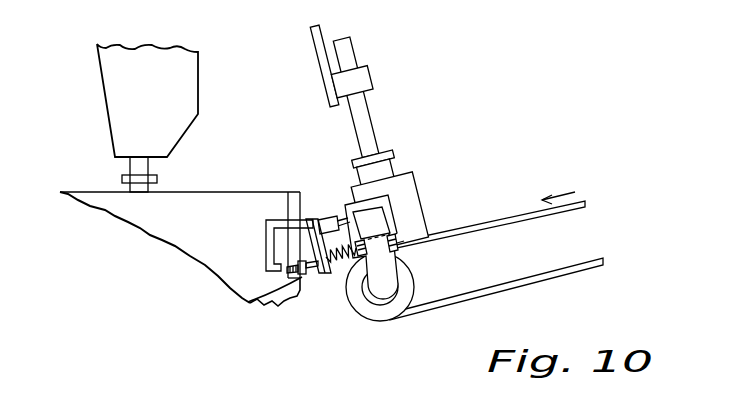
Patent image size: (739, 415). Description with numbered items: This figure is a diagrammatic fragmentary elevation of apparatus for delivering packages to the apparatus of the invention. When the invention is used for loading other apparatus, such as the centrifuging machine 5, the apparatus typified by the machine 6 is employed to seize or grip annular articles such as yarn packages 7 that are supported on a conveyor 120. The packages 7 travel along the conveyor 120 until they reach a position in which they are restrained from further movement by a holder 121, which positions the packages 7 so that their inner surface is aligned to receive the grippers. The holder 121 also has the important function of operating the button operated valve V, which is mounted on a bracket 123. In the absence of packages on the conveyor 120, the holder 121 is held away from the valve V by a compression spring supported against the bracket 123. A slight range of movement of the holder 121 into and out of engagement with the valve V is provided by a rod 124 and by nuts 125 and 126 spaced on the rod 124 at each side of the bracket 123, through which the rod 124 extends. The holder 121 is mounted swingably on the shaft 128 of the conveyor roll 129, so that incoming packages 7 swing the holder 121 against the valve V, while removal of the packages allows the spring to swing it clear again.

The centrifuging machine 5 is at (215, 185).
The machine 6 is at (137, 106).
The yarn packages 7 is at (415, 200).
The conveyor 120 is at (505, 220).
The holder 121 is at (355, 183).
The bracket 123 is at (288, 196).
The rod 124 is at (348, 258).
The nut 125 is at (249, 302).
The nut 126 is at (327, 278).
The shaft 128 is at (389, 288).
The conveyor roll 129 is at (406, 260).
The button operated valve V is at (326, 216).